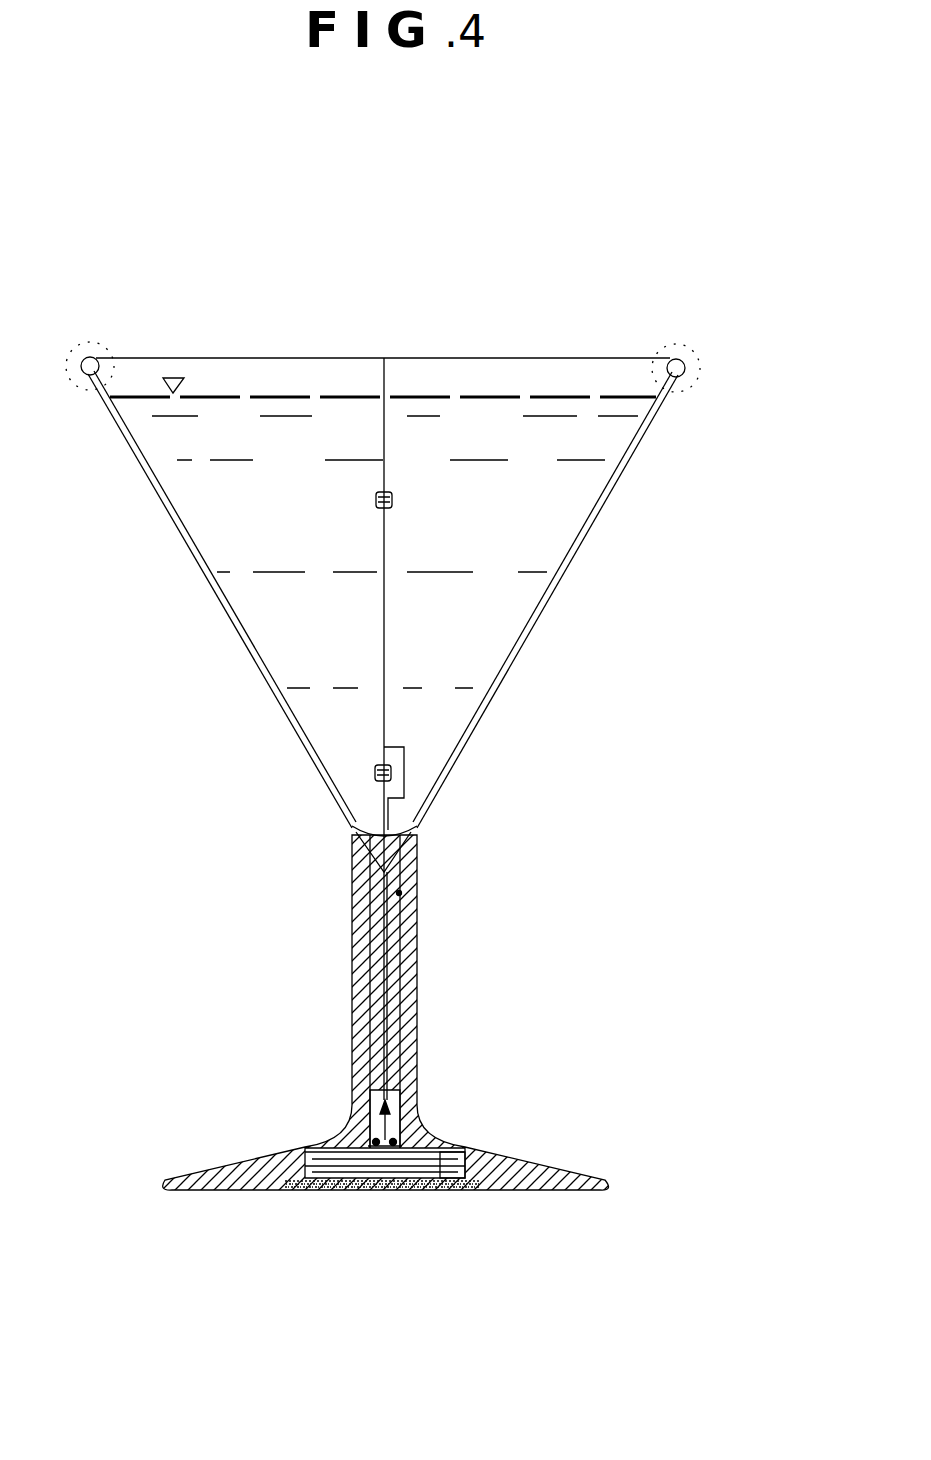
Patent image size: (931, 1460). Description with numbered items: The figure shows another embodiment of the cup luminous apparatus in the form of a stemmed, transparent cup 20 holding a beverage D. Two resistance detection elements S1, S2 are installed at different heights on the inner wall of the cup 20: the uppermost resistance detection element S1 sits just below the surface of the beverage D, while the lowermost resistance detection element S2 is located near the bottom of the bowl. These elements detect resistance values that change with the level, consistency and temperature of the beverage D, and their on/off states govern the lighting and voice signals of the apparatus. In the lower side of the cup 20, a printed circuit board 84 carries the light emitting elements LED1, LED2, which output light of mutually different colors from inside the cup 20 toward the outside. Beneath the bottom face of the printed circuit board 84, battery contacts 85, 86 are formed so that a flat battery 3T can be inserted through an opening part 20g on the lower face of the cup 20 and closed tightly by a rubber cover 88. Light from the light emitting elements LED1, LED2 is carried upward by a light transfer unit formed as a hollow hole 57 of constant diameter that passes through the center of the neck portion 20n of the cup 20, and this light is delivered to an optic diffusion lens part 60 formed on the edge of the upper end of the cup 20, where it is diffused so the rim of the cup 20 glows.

The cup 20 is at (206, 348).
The neck portion 20n is at (418, 992).
The opening part 20g is at (510, 1191).
The optic diffusion lens part 60 is at (89, 357).
The beverage D is at (360, 422).
The resistance detection element S1 is at (386, 490).
The resistance detection element S2 is at (396, 770).
The hollow hole 57 is at (400, 893).
The light emitting element LED1 is at (372, 1143).
The light emitting element LED2 is at (395, 1143).
The printed circuit board 84 is at (345, 1157).
The battery contact 85 is at (372, 1163).
The transistor 3T is at (395, 1166).
The rubber cover 88 is at (400, 1191).
The battery contact 86 is at (440, 1166).